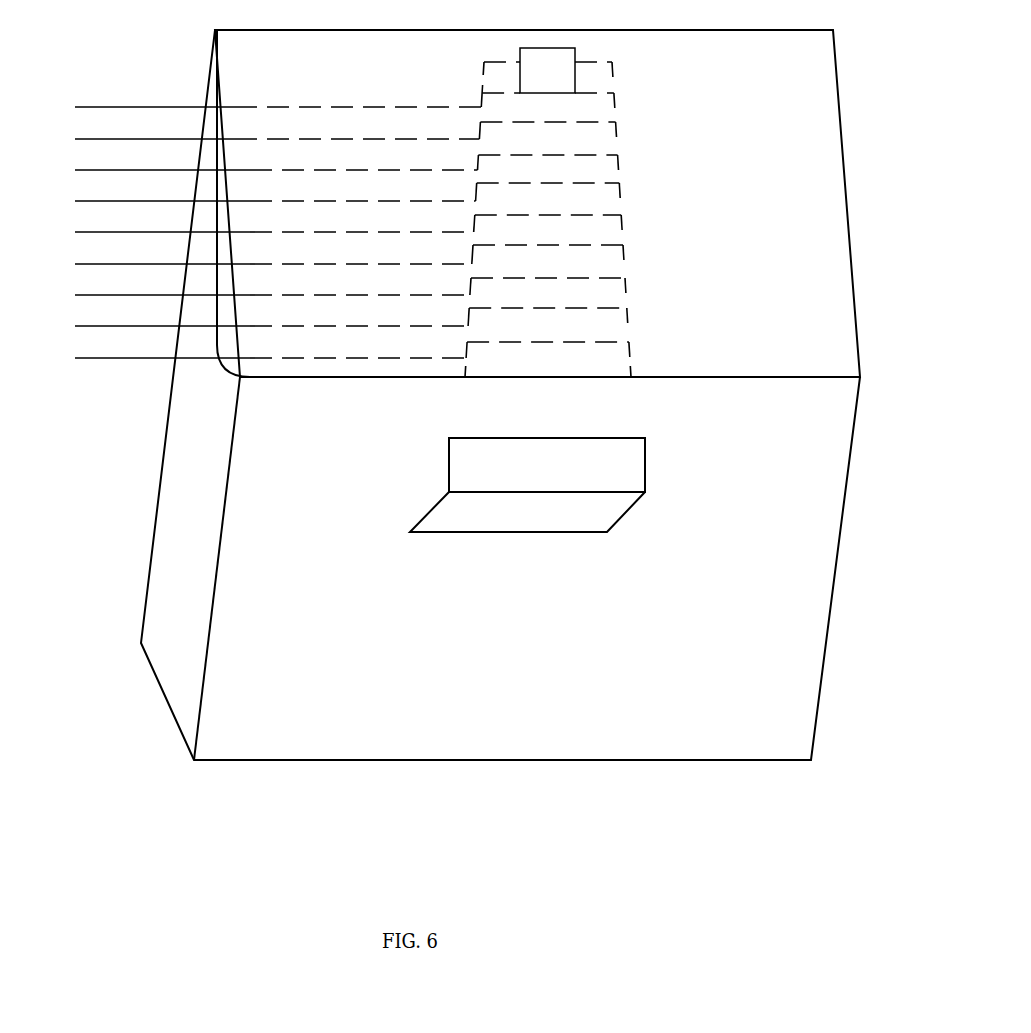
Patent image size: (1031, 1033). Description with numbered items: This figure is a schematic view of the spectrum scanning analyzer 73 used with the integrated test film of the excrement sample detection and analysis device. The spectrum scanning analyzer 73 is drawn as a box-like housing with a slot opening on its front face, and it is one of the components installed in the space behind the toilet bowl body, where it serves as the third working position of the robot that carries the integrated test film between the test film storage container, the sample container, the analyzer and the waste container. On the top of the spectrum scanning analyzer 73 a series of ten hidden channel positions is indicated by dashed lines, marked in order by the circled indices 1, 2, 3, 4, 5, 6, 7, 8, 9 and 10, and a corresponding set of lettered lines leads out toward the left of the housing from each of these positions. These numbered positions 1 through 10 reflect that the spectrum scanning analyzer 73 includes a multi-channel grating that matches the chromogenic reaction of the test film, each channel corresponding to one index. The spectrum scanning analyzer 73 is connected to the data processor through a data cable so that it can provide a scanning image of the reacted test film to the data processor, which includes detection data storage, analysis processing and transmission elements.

The spectrum scanning analyzer 73 is at (913, 178).
The slot 1 is at (567, 357).
The slot 2 is at (567, 323).
The slot 3 is at (566, 292).
The slot 4 is at (566, 259).
The slot 5 is at (566, 228).
The slot 6 is at (565, 196).
The slot 7 is at (565, 166).
The slot 8 is at (564, 134).
The slot 9 is at (564, 104).
The slot 10 is at (564, 72).